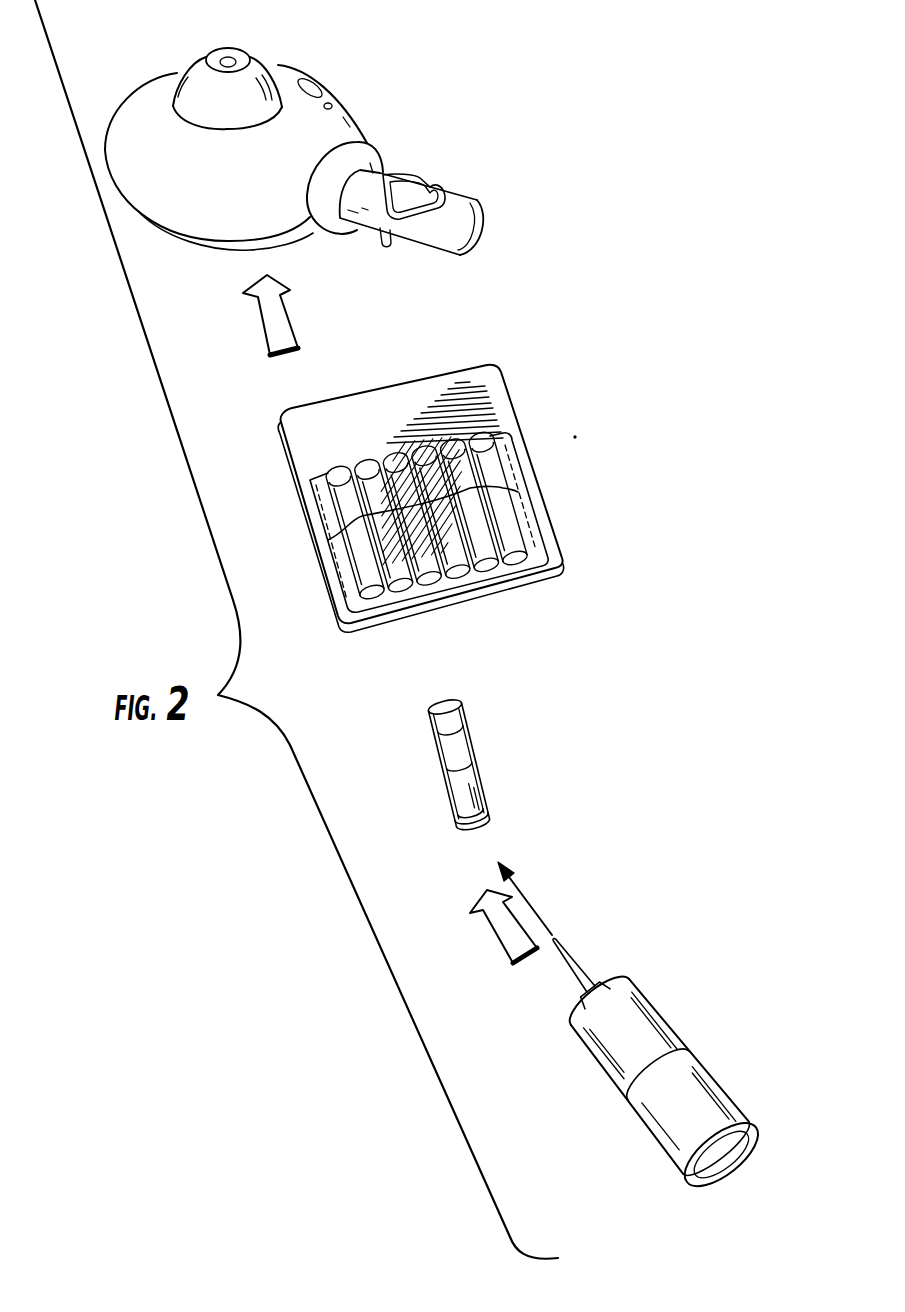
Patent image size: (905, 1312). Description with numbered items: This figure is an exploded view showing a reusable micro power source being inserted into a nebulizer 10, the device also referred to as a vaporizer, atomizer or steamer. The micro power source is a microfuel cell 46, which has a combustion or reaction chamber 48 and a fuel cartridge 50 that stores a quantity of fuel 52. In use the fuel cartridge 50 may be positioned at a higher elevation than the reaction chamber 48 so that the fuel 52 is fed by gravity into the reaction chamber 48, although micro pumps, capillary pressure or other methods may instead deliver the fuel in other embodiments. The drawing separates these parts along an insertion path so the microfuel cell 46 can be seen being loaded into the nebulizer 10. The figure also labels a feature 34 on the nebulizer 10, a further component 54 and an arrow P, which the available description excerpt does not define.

The nebulizer 10 is at (381, 108).
The outlet nozzle 34 is at (226, 60).
The microfuel cell 46 is at (432, 375).
The reaction chamber 48 is at (397, 593).
The fuel cartridge 50 is at (492, 812).
The fuel 52 is at (440, 738).
The syringe 54 is at (708, 1068).
The insertion direction P is at (277, 330).